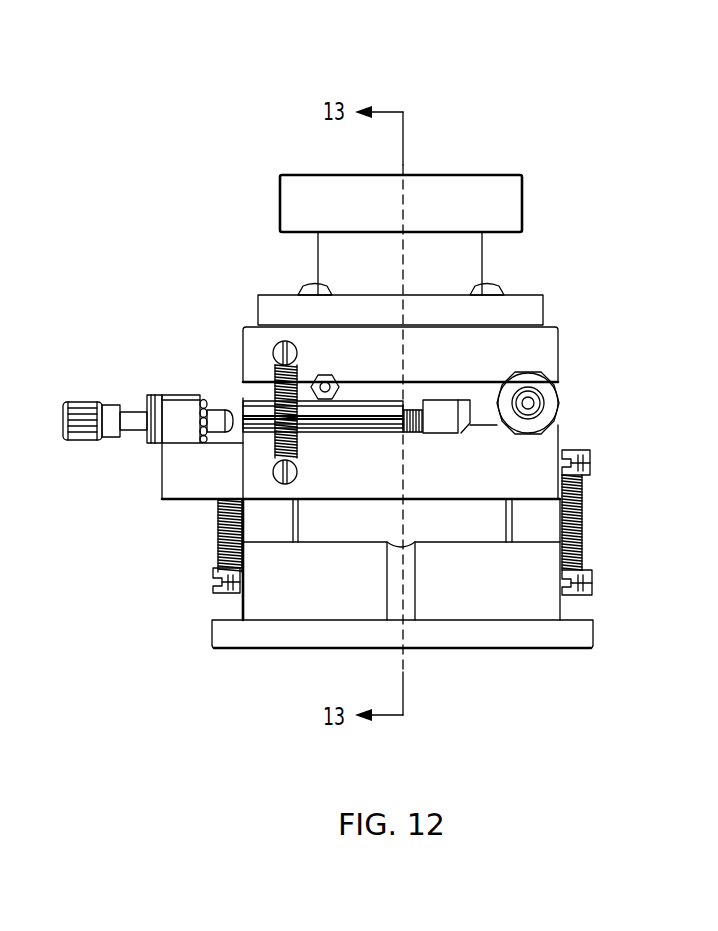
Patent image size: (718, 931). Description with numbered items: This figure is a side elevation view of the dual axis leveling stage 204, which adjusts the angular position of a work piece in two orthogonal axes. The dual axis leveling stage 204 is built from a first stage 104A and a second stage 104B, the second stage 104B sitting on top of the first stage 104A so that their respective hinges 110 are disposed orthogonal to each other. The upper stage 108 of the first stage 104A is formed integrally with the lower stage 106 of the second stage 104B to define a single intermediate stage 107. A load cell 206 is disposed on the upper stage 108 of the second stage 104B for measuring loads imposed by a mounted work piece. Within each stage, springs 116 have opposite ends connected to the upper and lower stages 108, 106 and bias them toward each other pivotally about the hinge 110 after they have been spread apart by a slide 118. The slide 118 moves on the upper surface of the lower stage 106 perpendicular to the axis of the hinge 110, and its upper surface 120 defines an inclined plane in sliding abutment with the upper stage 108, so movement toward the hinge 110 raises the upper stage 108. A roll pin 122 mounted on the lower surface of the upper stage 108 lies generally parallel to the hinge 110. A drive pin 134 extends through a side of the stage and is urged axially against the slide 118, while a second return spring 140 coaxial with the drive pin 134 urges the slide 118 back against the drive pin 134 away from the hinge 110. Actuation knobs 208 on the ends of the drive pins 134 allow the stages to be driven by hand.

The dual axis leveling stage 204 is at (532, 112).
The load cell 206 is at (318, 255).
The upper stage 108 is at (243, 337).
The intermediate stage 107 is at (250, 486).
The lower stage 106 is at (250, 607).
The first stage 104A is at (625, 423).
The second stage 104B is at (598, 502).
The springs 116 is at (275, 393).
The roll pin 122 is at (326, 373).
The upper surface 120 is at (358, 401).
The slide 118 is at (327, 421).
The second return spring 140 is at (412, 408).
The hinge 110 is at (526, 378).
The actuation knobs 208 is at (90, 403).
The drive pin 134 is at (132, 428).